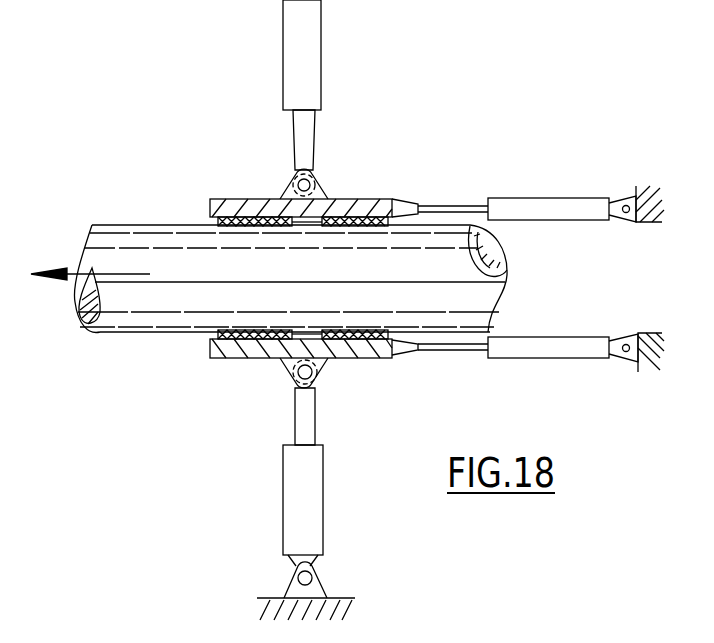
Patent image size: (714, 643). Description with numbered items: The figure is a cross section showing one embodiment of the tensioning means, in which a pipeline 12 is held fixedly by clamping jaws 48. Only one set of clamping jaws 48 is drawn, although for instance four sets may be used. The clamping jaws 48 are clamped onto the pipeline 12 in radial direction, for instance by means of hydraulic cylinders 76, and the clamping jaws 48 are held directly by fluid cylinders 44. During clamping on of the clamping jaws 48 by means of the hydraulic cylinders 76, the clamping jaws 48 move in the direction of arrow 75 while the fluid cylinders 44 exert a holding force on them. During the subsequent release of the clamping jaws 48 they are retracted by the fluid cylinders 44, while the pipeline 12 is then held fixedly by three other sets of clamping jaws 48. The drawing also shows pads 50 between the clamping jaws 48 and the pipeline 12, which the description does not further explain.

The pipeline 12 is at (448, 270).
The fluid cylinders 44 is at (562, 200).
The clamping jaws 48 is at (227, 199).
The friction pads 50 is at (354, 330).
The arrow 75 is at (78, 268).
The hydraulic cylinders 76 is at (305, 42).